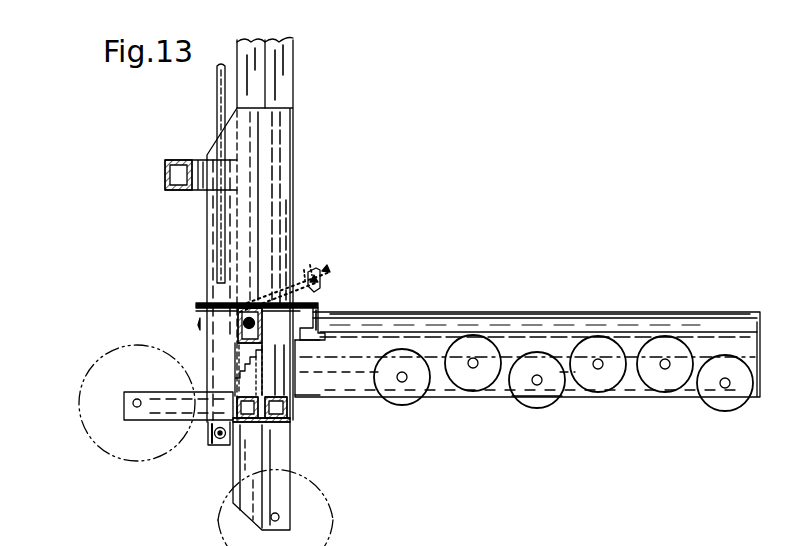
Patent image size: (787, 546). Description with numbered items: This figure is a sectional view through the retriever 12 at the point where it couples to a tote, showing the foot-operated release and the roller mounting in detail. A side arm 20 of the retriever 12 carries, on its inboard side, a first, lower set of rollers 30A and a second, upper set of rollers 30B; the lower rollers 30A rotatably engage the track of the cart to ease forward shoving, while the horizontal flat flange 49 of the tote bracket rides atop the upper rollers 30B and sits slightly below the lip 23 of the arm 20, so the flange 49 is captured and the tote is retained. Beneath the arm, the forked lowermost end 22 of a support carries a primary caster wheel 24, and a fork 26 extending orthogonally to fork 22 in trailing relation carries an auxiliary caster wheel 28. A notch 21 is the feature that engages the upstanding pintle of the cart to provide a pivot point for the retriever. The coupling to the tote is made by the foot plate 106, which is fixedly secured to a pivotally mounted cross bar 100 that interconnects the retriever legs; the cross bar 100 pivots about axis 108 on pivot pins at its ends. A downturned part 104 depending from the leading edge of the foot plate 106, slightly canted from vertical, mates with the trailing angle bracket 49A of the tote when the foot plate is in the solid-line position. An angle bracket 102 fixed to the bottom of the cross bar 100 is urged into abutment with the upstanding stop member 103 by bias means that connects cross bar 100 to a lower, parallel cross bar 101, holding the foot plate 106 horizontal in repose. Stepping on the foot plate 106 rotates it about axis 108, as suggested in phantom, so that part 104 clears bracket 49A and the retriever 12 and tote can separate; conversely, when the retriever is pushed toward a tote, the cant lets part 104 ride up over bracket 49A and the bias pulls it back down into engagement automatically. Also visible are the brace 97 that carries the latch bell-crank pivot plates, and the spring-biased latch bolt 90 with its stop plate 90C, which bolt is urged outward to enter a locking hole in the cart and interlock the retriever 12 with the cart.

The retriever 12 is at (384, 123).
The arms 20 is at (749, 347).
The notch 21 is at (522, 398).
The forked lowermost ends 22 is at (277, 491).
The lip 23 is at (565, 312).
The primary caster wheels 24 is at (305, 526).
The forks 26 is at (130, 412).
The auxiliary caster wheels 28 is at (120, 370).
The lower set of rollers 30A is at (712, 403).
The upper set of rollers 30B is at (469, 344).
The horizontal flat flange 49 is at (523, 313).
The angle bracket 49A is at (298, 386).
The latch bolt 90 is at (213, 447).
The stop plate 90C is at (226, 448).
The brace 97 is at (207, 156).
The cross bar 100 is at (237, 328).
The cross bar 101 is at (276, 421).
The angle bracket 102 is at (236, 346).
The stop member 103 is at (236, 382).
The downturned part 104 is at (330, 312).
The foot plate 106 is at (205, 298).
The pivot axis 108 is at (249, 302).